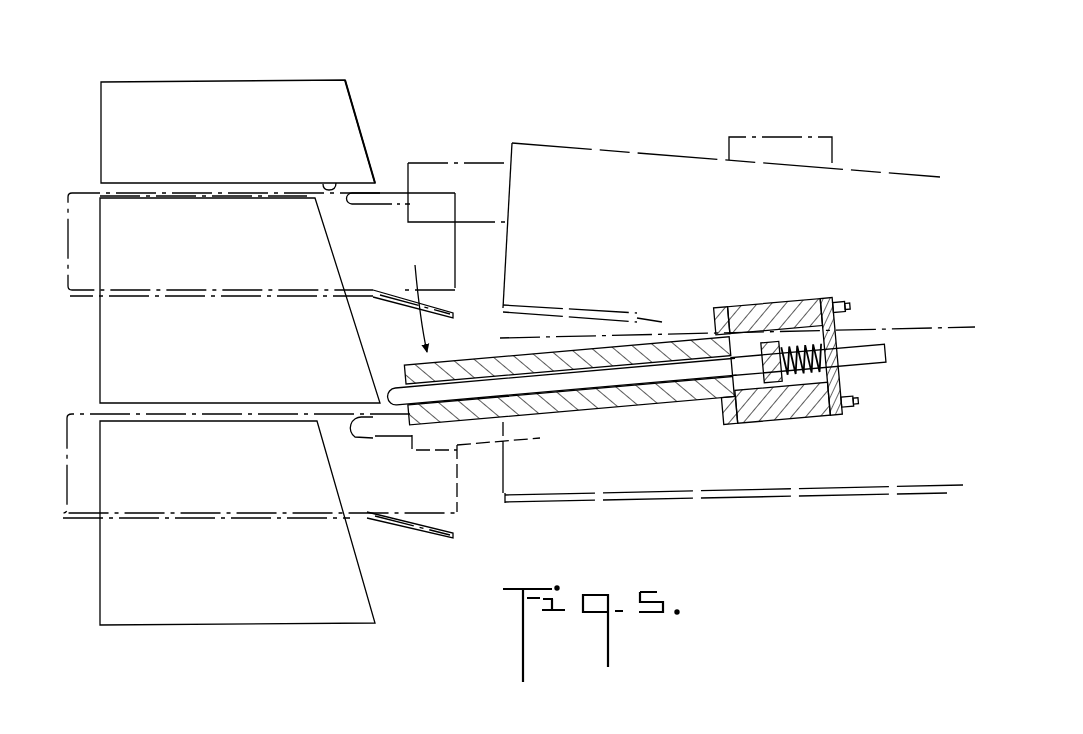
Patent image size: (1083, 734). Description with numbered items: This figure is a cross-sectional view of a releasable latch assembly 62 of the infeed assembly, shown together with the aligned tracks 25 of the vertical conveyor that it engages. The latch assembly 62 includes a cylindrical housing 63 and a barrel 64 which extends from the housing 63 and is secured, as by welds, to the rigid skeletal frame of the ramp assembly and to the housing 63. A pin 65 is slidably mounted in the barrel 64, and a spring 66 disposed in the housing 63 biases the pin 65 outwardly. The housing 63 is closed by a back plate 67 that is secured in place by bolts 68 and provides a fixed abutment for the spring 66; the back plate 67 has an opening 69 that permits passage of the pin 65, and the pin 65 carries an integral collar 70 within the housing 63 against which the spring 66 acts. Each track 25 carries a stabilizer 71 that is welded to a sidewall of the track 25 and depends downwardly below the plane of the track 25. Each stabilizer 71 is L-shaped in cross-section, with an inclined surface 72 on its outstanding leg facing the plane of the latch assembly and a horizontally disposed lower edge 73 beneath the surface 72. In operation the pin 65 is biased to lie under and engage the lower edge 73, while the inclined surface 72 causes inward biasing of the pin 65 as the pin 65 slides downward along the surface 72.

The aligned tracks 25 is at (74, 180).
The releasable latch assembly 62 is at (665, 298).
The cylindrical housing 63 is at (805, 302).
The barrel 64 is at (469, 359).
The pin 65 is at (386, 182).
The spring 66 is at (833, 376).
The back plate 67 is at (843, 417).
The bolts 68 is at (849, 302).
The opening 69 is at (848, 343).
The collar 70 is at (767, 338).
The stabilizer 71 is at (268, 87).
The inclined surface 72 is at (352, 98).
The lower edge 73 is at (329, 184).